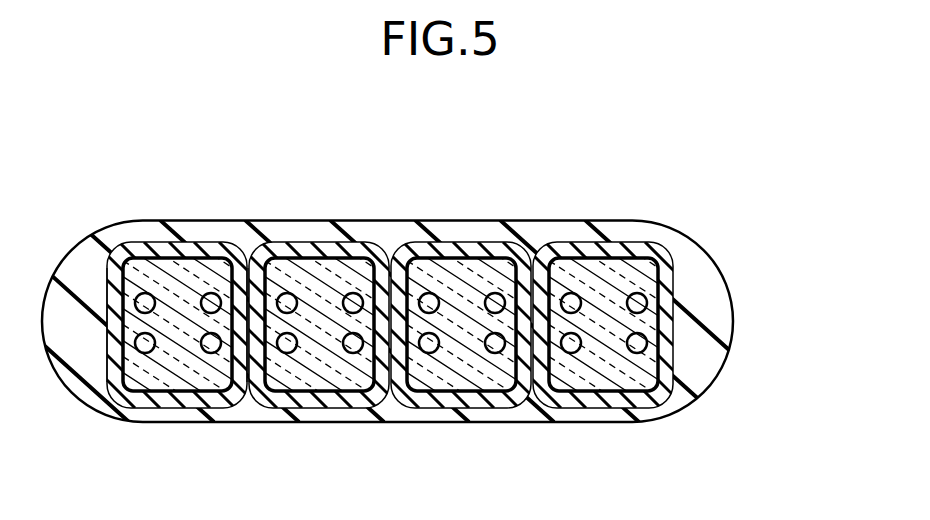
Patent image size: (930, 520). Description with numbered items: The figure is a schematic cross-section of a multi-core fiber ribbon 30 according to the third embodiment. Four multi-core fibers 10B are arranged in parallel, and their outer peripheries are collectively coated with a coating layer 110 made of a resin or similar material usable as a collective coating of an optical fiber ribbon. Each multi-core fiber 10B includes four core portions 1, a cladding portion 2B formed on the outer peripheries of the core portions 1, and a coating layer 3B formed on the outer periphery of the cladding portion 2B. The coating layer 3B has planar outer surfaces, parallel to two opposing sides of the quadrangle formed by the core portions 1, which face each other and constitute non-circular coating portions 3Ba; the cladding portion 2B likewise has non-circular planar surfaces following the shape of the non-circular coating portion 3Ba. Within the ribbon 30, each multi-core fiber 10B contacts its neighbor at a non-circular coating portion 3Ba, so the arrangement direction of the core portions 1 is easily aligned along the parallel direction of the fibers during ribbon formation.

The core portion 1 is at (147, 294).
The cladding portion 2B is at (177, 321).
The coating layer 3B is at (205, 321).
The non-circular coating portion 3Ba is at (110, 346).
The multi-core fiber 10B is at (418, 321).
The multi-core fiber ribbon 30 is at (418, 287).
The coating layer 110 is at (705, 316).